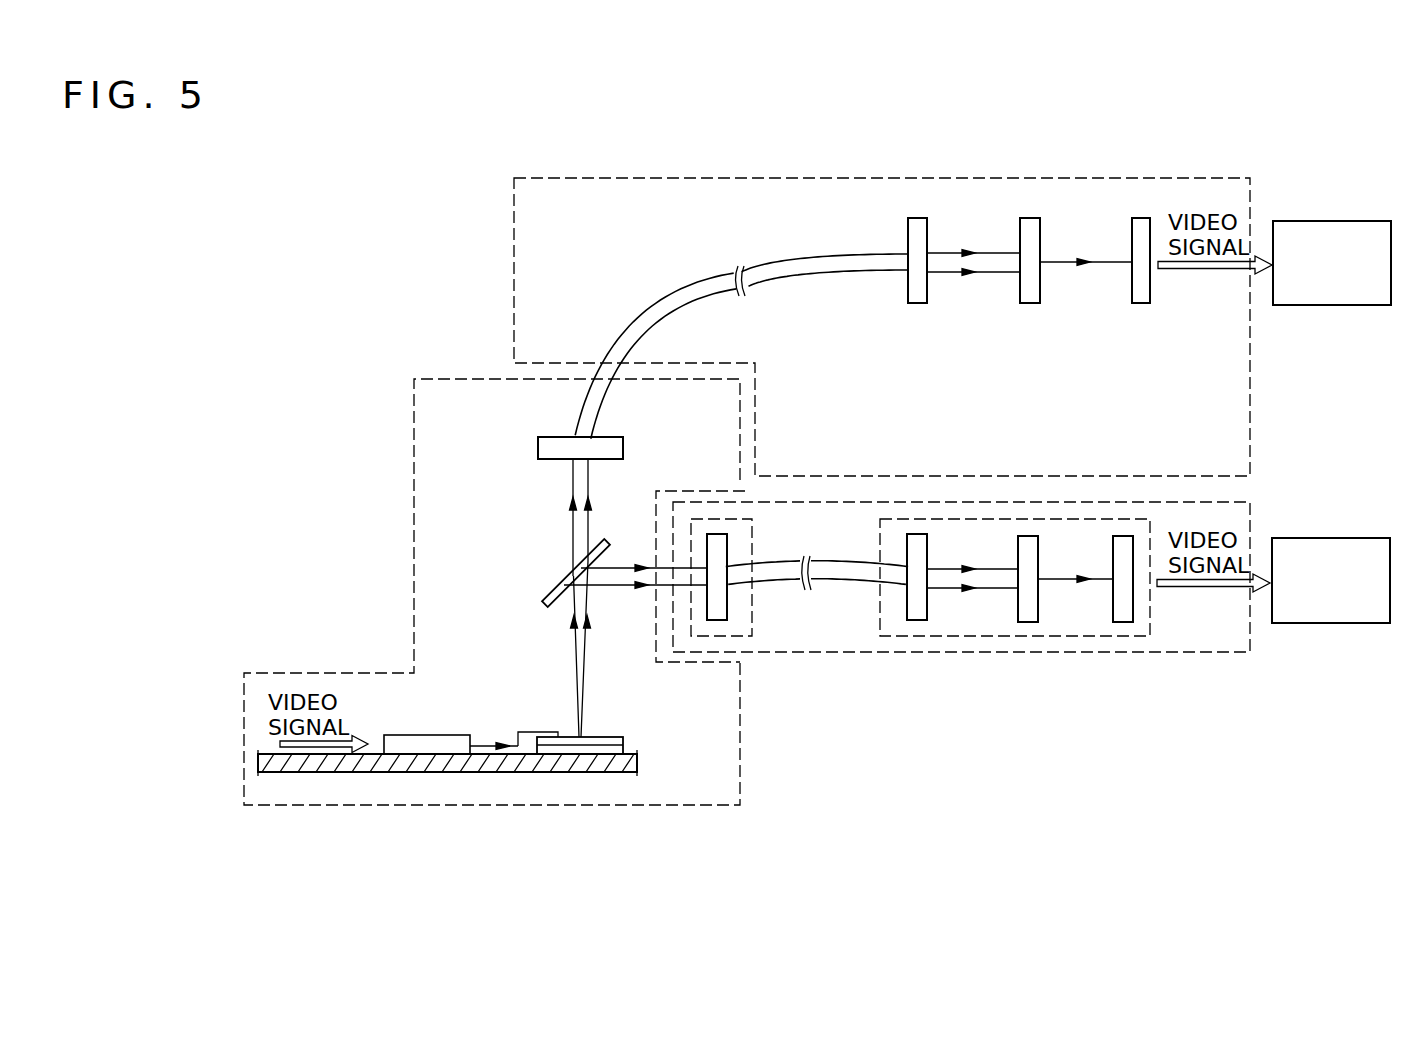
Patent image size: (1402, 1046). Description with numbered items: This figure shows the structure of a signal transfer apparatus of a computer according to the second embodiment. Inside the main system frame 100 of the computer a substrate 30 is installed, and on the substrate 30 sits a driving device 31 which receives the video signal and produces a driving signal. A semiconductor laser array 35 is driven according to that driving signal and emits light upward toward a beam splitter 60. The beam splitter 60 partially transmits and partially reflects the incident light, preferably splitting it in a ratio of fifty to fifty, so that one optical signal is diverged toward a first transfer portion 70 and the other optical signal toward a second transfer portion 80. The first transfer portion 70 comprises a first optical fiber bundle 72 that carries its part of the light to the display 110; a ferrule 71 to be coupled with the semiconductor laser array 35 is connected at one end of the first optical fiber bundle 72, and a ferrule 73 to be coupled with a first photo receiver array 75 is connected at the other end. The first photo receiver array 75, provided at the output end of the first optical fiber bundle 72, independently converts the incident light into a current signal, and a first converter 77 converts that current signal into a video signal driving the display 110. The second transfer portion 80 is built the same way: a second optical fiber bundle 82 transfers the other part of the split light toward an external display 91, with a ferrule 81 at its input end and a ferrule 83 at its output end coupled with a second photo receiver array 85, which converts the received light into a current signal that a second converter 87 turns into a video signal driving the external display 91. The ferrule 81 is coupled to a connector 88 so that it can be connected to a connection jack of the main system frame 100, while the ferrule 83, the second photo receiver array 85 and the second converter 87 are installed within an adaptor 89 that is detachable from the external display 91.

The main system frame 100 is at (275, 807).
The substrate 30 is at (352, 773).
The driving device 31 is at (435, 754).
The semiconductor laser array 35 is at (556, 754).
The beam splitter 60 is at (557, 581).
The first transfer portion 70 is at (727, 178).
The ferrule 71 is at (538, 446).
The first optical fiber bundle 72 is at (819, 257).
The ferrule 73 is at (920, 218).
The first photo receiver array 75 is at (1031, 218).
The first converter 77 is at (1145, 218).
The display 110 is at (1322, 221).
The second transfer portion 80 is at (1200, 652).
The ferrule 81 is at (710, 620).
The second optical fiber bundle 82 is at (830, 585).
The ferrule 83 is at (918, 620).
The second photo receiver array 85 is at (1026, 622).
The second converter 87 is at (1123, 622).
The connector 88 is at (747, 637).
The adaptor 89 is at (958, 637).
The external display 91 is at (1312, 623).